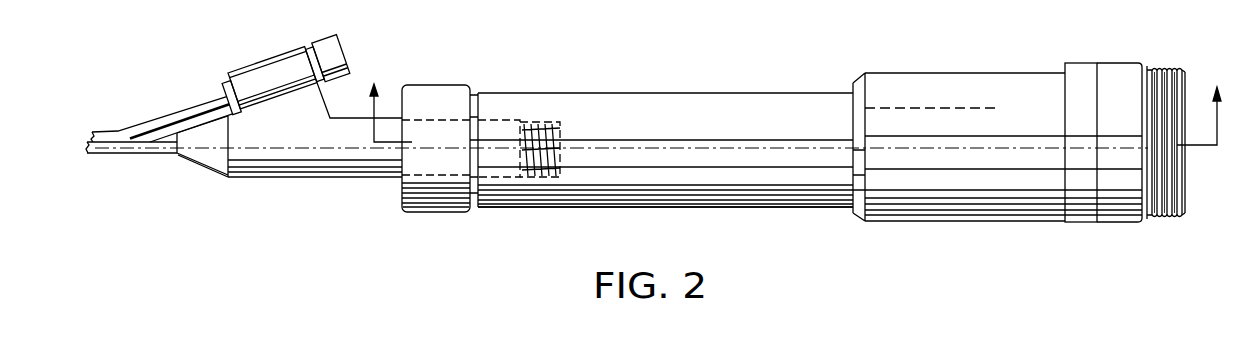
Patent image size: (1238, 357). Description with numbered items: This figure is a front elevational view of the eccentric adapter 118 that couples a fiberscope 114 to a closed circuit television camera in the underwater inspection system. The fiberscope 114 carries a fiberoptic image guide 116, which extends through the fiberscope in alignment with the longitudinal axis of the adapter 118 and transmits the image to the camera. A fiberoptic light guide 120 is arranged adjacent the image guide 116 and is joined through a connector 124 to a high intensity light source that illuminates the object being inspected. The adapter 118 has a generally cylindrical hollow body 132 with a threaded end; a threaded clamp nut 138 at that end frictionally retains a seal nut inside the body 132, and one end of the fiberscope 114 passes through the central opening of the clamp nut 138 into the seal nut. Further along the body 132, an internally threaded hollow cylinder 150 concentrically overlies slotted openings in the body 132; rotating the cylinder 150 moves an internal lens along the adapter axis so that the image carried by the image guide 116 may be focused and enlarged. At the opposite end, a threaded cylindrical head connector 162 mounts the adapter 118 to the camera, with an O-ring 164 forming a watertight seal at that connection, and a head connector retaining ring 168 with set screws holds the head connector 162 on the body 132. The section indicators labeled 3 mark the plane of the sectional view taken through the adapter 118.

The fiberscope 114 is at (298, 145).
The fiberoptic image guide 116 is at (113, 147).
The eccentric adapter 118 is at (617, 205).
The fiberoptic light guide 120 is at (115, 135).
The connector 124 is at (258, 82).
The hollow body 132 is at (731, 108).
The threaded clamp nut 138 is at (433, 103).
The internally threaded hollow cylinder 150 is at (938, 205).
The threaded cylindrical head connector 162 is at (1115, 210).
The O-ring 164 is at (1145, 63).
The head connector retaining ring 168 is at (1082, 75).
The section line 3- 3 is at (795, 105).